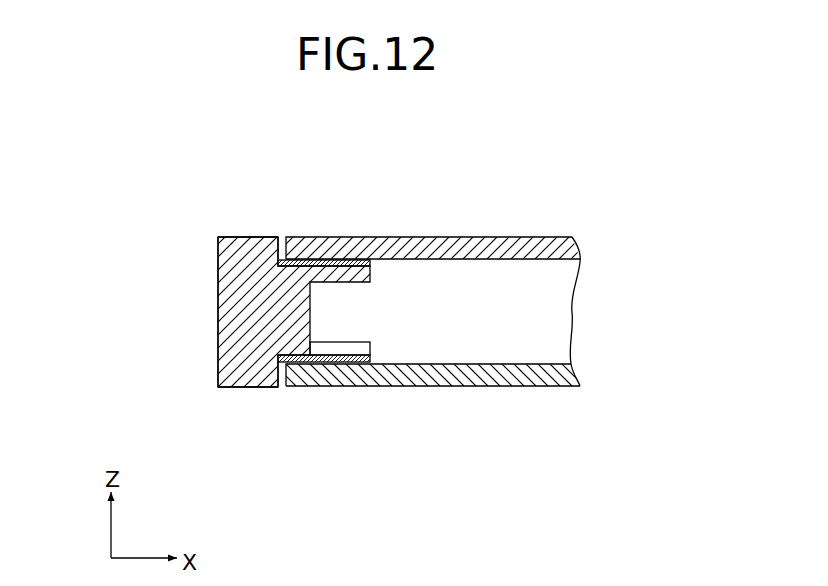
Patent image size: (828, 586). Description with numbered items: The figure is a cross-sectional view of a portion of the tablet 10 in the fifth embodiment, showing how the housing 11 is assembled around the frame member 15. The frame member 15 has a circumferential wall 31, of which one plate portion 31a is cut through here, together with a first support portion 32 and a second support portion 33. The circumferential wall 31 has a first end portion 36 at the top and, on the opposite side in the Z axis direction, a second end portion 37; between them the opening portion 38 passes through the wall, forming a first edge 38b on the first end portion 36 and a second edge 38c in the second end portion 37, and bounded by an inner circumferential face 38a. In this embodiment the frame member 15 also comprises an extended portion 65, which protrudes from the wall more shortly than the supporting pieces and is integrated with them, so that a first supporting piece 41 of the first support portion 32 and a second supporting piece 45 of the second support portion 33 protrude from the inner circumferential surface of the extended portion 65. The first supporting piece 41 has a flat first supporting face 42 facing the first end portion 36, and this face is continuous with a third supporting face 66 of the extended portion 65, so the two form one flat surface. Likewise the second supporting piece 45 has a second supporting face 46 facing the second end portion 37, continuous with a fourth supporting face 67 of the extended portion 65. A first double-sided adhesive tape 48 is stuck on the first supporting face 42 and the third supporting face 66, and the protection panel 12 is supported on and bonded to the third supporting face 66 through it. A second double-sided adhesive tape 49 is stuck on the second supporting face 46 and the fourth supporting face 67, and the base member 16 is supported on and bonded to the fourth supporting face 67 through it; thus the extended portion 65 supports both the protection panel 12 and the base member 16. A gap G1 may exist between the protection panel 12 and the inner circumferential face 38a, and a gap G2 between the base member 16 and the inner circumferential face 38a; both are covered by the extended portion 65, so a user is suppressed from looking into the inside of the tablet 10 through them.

The tablet 10 is at (217, 176).
The housing 11 is at (576, 387).
The protection panel 12 is at (553, 245).
The frame member 15 is at (218, 377).
The base member 16 is at (550, 378).
The circumferential wall 31 is at (230, 356).
The plate portion 31a is at (218, 275).
The first support portion 32 is at (405, 237).
The second support portion 33 is at (372, 353).
The first end portion 36 is at (232, 237).
The second end portion 37 is at (242, 387).
The opening portion 38 is at (542, 302).
The inner circumferential face 38a is at (540, 328).
The first edge 38b is at (285, 233).
The second edge 38c is at (278, 387).
The first supporting piece 41 is at (370, 268).
The first supporting face 42 is at (357, 260).
The second supporting piece 45 is at (362, 350).
The second supporting face 46 is at (347, 386).
The first double-sided adhesive tape 48 is at (372, 264).
The second double-sided adhesive tape 49 is at (373, 388).
The extended portion 65 is at (296, 308).
The third supporting face 66 is at (340, 260).
The fourth supporting face 67 is at (305, 387).
The gap G1 is at (300, 260).
The gap G2 is at (285, 388).